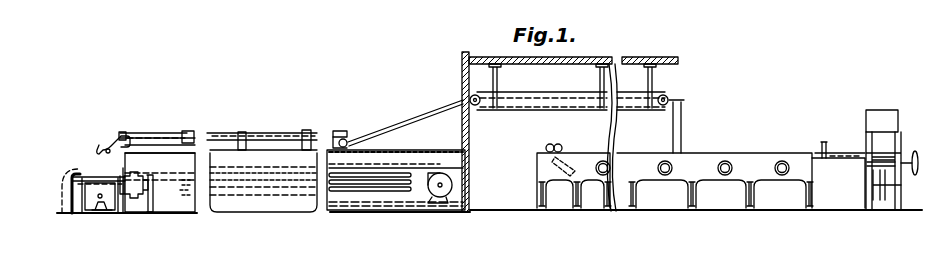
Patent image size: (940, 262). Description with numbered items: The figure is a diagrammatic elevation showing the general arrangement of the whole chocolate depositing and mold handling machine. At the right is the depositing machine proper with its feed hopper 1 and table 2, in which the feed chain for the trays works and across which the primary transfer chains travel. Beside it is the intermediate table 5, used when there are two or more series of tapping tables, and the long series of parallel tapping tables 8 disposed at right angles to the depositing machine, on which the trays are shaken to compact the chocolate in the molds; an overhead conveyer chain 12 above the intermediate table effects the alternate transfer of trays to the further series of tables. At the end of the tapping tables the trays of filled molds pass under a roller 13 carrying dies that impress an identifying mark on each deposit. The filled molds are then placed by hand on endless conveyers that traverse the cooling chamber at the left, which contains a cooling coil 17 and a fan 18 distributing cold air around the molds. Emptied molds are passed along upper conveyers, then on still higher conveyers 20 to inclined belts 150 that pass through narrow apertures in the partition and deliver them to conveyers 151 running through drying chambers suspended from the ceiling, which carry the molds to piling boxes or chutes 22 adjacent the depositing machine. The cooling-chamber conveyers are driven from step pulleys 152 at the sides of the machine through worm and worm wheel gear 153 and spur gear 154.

The feed hopper 1 is at (898, 122).
The table 2 is at (867, 162).
The intermediate table 5 is at (845, 156).
The tapping tables 8 is at (640, 153).
The overhead conveyer chain 12 is at (823, 142).
The roller 13 is at (563, 148).
The cooling coil 17 is at (373, 200).
The fan 18 is at (433, 186).
The higher conveyers 20 is at (125, 136).
The piling boxes or chutes 22 is at (681, 126).
The inclined belts 150 is at (385, 128).
The conveyers 151 is at (553, 97).
The step pulleys 152 is at (136, 190).
The worm and worm wheel gear 153 is at (117, 213).
The spur gear 154 is at (73, 166).